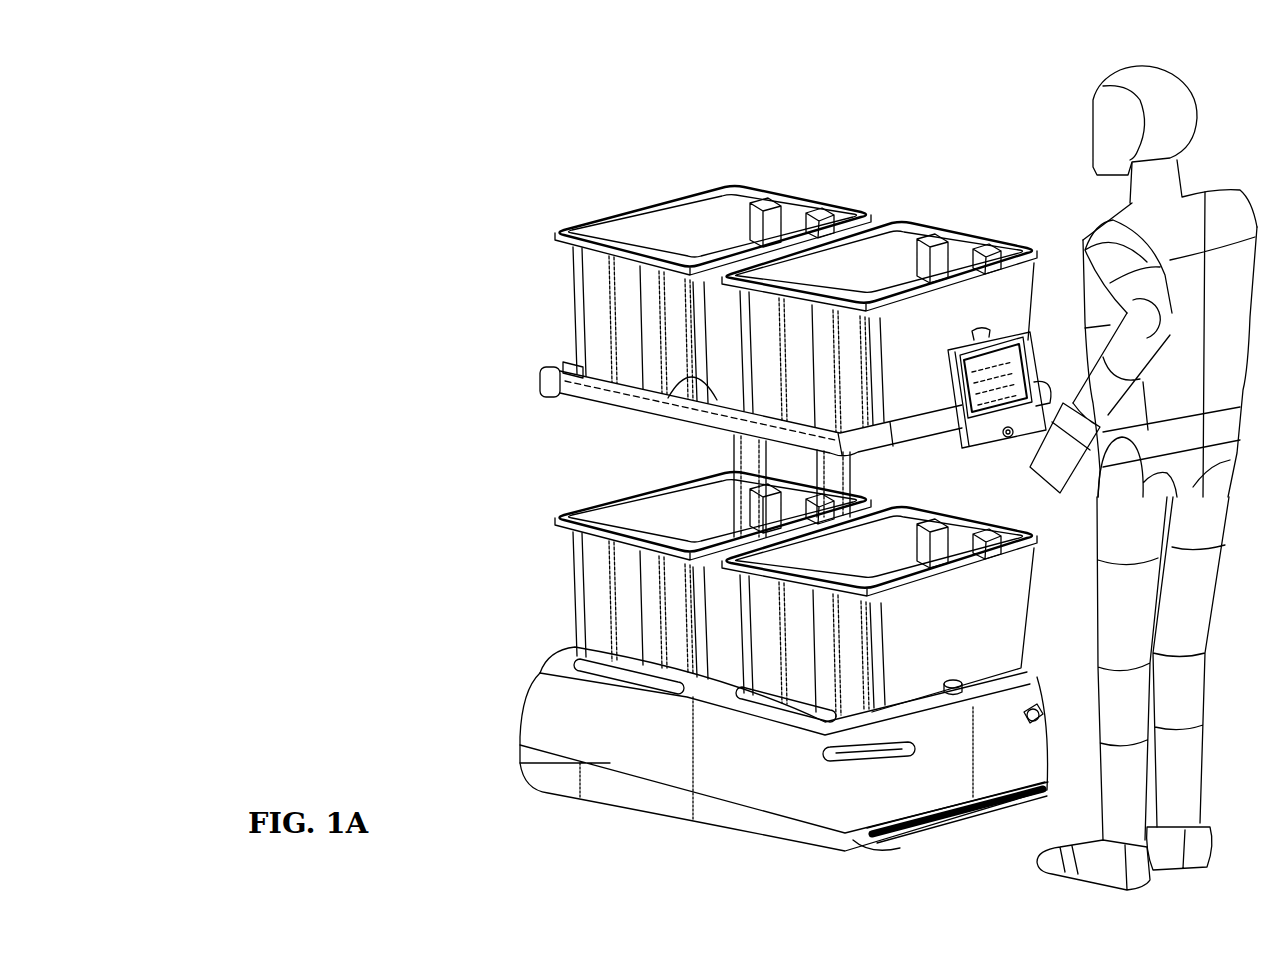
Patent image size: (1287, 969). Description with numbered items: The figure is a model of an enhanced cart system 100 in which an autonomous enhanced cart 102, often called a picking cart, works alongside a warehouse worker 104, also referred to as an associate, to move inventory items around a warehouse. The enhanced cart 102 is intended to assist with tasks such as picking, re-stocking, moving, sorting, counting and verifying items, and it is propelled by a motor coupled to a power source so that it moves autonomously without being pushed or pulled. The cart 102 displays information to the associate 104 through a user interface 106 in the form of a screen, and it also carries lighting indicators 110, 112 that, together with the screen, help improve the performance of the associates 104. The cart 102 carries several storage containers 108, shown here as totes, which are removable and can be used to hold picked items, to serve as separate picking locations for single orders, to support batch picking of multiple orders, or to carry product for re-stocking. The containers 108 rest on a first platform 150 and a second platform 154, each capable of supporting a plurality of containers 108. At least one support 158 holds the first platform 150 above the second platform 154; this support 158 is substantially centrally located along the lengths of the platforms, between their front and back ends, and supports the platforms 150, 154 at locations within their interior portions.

The enhanced cart system 100 is at (614, 38).
The enhanced cart 102 is at (784, 788).
The warehouse worker 104 is at (1076, 180).
The user interface 106 is at (972, 462).
The storage container 108 is at (595, 222).
The lighting indicator 110 is at (843, 755).
The lighting indicator 112 is at (566, 365).
The first platform 150 is at (665, 393).
The second platform 154 is at (717, 678).
The support 158 is at (830, 507).